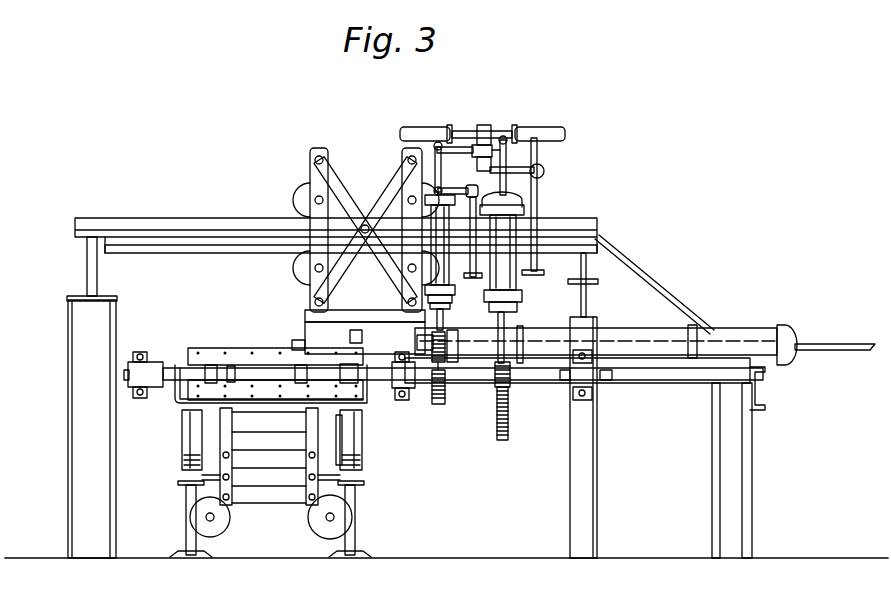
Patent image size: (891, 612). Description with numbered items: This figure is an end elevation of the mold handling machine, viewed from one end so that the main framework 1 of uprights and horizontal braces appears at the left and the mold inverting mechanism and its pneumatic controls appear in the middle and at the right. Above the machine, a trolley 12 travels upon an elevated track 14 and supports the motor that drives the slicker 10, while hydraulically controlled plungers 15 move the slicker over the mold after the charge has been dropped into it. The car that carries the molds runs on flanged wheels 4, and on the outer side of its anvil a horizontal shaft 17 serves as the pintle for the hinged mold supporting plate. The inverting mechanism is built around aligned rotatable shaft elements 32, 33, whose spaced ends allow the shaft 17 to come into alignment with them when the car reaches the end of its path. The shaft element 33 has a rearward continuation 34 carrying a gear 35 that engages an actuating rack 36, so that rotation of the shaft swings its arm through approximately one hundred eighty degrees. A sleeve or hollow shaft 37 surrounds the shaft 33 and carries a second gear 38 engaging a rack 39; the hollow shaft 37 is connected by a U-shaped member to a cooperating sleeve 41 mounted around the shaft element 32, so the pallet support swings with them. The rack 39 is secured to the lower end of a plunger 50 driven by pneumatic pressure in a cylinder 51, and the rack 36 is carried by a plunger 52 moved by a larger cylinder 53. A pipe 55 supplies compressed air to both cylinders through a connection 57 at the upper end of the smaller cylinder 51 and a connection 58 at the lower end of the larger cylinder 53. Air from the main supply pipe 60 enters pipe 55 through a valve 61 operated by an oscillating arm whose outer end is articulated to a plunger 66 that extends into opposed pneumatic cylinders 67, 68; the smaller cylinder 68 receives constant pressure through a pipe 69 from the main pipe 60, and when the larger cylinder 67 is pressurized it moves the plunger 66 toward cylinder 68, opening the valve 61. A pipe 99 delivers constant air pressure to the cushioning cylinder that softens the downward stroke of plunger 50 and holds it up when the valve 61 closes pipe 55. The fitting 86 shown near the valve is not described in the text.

The framework 1 is at (85, 416).
The flanged wheels 4 is at (185, 442).
The slicker 10 is at (183, 392).
The trolley 12 is at (345, 190).
The elevated track 14 is at (232, 217).
The hydraulically controlled plungers 15 is at (396, 350).
The horizontal shaft 17 is at (265, 360).
The rotatable shaft element 32 is at (187, 366).
The rotatable shaft element 33 is at (350, 368).
The rearward continuation 34 is at (468, 378).
The gear 35 is at (493, 390).
The actuating rack 36 is at (510, 418).
The sleeve or hollow shaft 37 is at (348, 428).
The second gear 38 is at (433, 395).
The rack 39 is at (445, 398).
The cooperating sleeve 41 is at (168, 358).
The plunger 50 is at (446, 320).
The cylinder 51 is at (431, 234).
The plunger 52 is at (506, 325).
The larger cylinder 53 is at (520, 222).
The pipe 55 is at (455, 153).
The connection 57 is at (472, 202).
The connection 58 is at (482, 292).
The main supply pipe 60 is at (544, 173).
The valve 61 is at (486, 124).
The plunger 66 is at (505, 130).
The pneumatic cylinder 67 is at (543, 126).
The pneumatic cylinder 68 is at (425, 132).
The pipe 69 is at (538, 150).
The fitting 86 is at (495, 160).
The pipe 99 is at (462, 276).